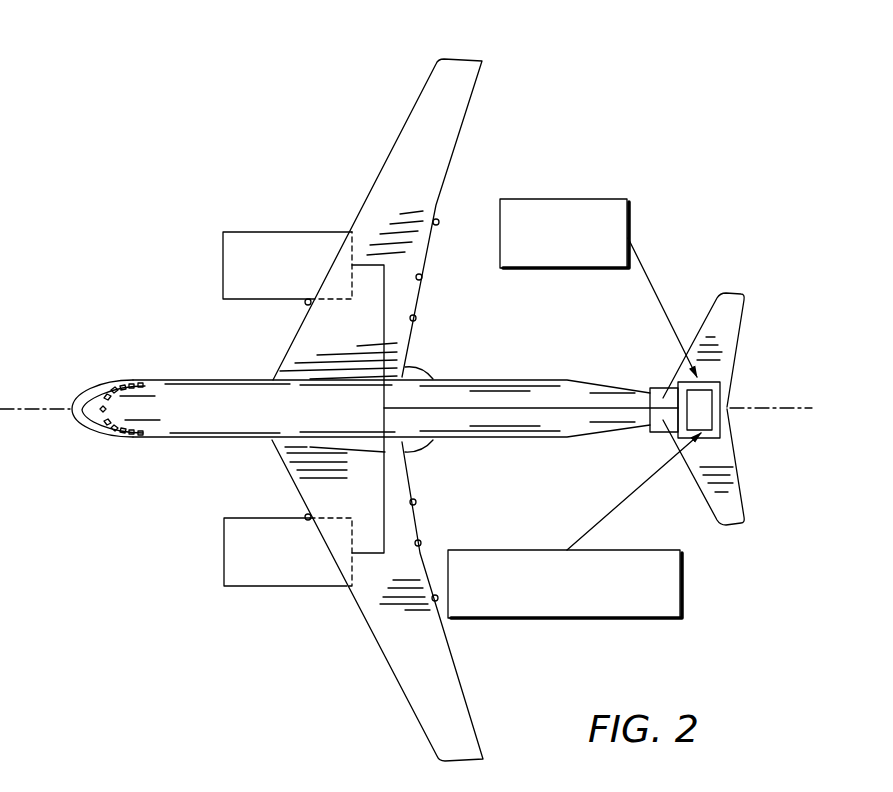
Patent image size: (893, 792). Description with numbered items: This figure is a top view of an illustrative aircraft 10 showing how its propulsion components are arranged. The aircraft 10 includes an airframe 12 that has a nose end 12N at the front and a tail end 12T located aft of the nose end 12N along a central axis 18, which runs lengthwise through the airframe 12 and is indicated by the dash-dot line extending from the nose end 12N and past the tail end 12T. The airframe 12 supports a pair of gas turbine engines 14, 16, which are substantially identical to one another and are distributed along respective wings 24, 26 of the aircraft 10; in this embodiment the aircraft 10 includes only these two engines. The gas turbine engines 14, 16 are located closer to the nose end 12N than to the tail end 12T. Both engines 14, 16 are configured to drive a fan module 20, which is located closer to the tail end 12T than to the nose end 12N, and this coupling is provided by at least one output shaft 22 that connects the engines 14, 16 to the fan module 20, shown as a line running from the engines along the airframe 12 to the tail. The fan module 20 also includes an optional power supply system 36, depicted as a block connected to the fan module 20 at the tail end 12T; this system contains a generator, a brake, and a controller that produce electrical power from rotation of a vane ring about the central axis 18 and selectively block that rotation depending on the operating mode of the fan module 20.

The aircraft 10 is at (418, 387).
The airframe 12 is at (463, 383).
The nose end 12N is at (69, 406).
The tail end 12T is at (736, 384).
The gas turbine engine 14 is at (277, 570).
The gas turbine engine 16 is at (290, 230).
The central axis 18 is at (802, 403).
The fan module 20 is at (601, 196).
The output shaft 22 is at (541, 391).
The wing 24 is at (430, 693).
The wing 26 is at (430, 129).
The optional power supply system 36 is at (684, 583).